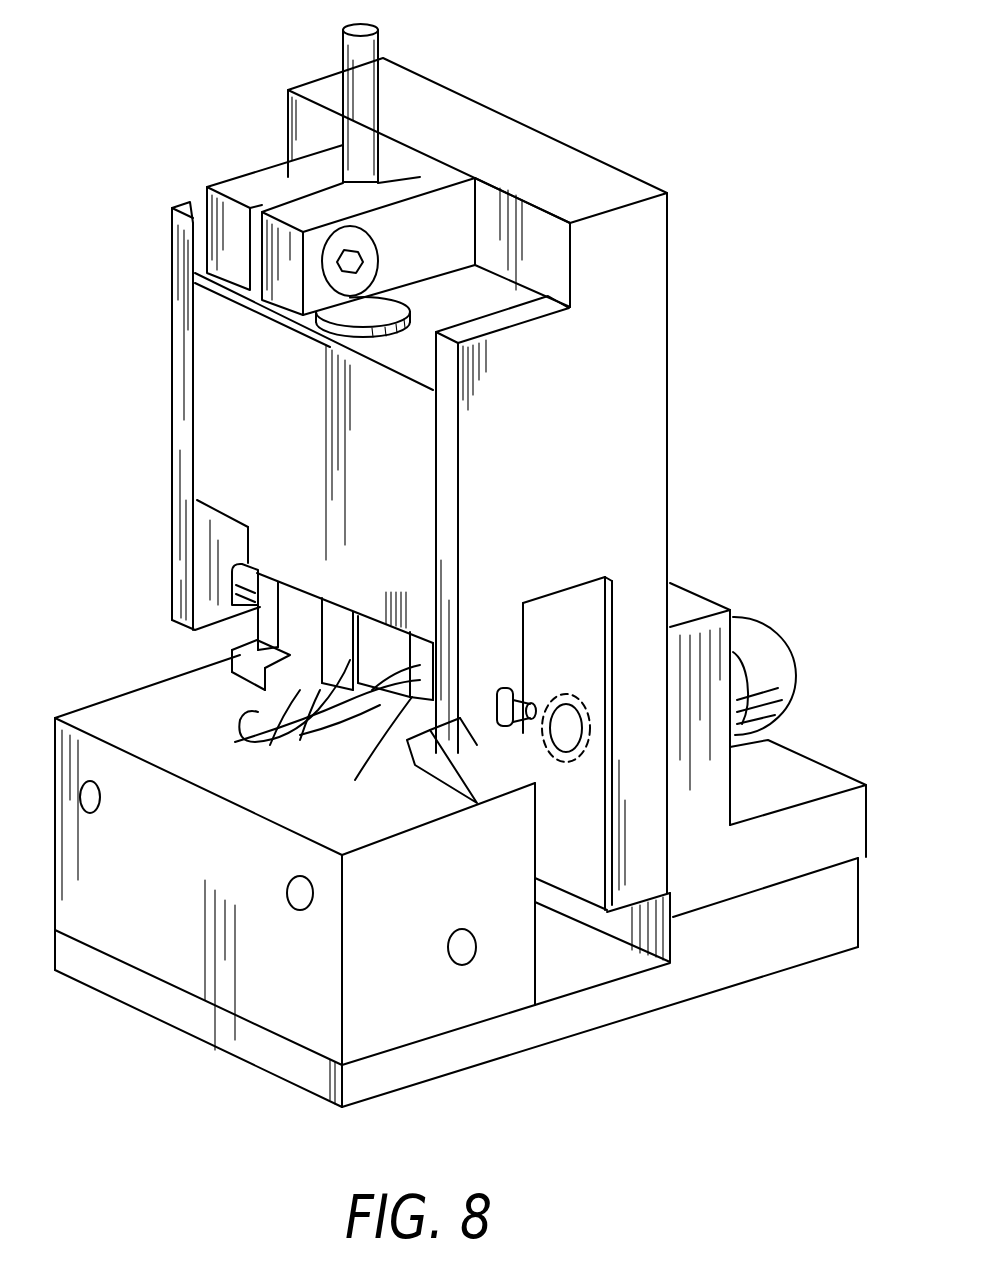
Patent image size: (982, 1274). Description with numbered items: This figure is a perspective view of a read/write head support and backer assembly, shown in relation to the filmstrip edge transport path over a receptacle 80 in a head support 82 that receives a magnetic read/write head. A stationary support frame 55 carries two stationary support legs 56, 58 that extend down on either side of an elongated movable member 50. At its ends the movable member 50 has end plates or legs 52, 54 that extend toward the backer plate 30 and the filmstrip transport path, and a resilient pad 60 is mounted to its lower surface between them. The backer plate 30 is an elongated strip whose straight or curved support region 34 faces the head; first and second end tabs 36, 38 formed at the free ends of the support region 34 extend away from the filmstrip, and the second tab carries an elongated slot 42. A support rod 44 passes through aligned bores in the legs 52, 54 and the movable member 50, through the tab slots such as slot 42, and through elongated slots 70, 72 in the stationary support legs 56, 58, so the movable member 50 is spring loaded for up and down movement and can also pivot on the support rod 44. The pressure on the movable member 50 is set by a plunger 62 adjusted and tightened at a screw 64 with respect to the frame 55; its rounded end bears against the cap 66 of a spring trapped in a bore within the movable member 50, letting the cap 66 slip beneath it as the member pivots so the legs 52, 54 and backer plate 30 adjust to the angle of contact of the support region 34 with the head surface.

The backer plate 30 is at (342, 738).
The support region 34 is at (258, 712).
The first end tab 36 is at (253, 637).
The second end tab 38 is at (420, 678).
The elongated slot 42 is at (433, 790).
The support rod 44 is at (540, 680).
The movable member 50 is at (220, 405).
The leg 52 is at (247, 670).
The leg 54 is at (355, 780).
The stationary support frame 55 is at (672, 238).
The stationary support leg 56 is at (172, 240).
The stationary support leg 58 is at (612, 394).
The resilient pad 60 is at (300, 740).
The plunger 62 is at (362, 85).
The screw 64 is at (367, 243).
The cap 66 is at (325, 320).
The elongated slot 70 is at (213, 612).
The elongated slot 72 is at (503, 690).
The receptacle 80 is at (270, 745).
The head support 82 is at (128, 980).